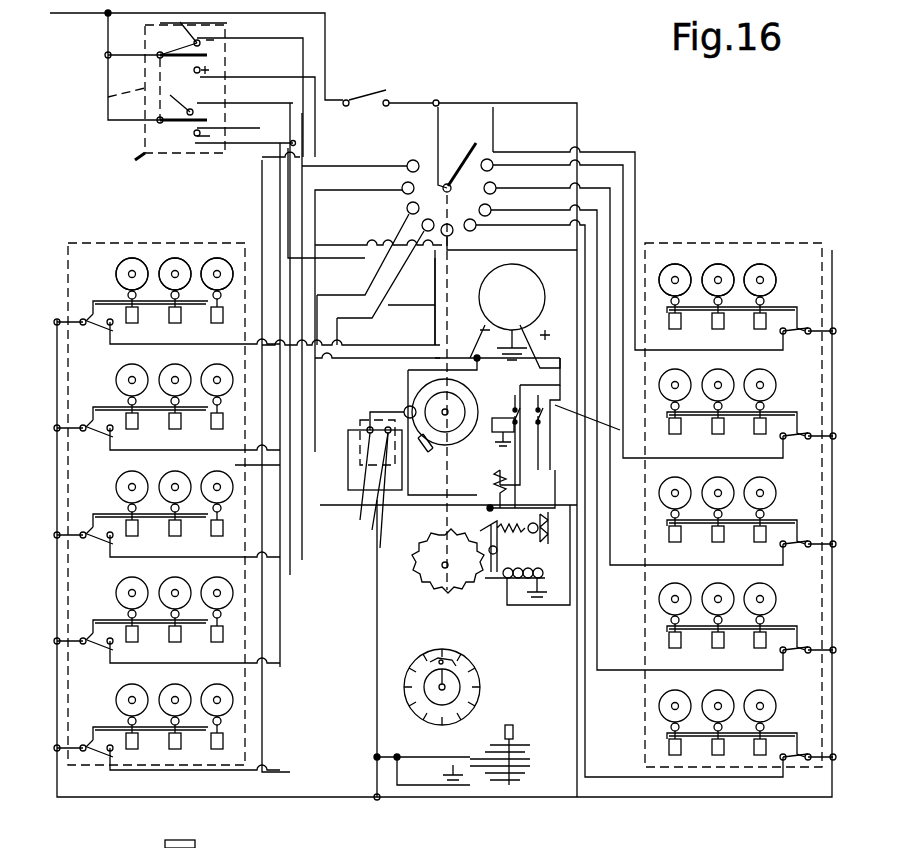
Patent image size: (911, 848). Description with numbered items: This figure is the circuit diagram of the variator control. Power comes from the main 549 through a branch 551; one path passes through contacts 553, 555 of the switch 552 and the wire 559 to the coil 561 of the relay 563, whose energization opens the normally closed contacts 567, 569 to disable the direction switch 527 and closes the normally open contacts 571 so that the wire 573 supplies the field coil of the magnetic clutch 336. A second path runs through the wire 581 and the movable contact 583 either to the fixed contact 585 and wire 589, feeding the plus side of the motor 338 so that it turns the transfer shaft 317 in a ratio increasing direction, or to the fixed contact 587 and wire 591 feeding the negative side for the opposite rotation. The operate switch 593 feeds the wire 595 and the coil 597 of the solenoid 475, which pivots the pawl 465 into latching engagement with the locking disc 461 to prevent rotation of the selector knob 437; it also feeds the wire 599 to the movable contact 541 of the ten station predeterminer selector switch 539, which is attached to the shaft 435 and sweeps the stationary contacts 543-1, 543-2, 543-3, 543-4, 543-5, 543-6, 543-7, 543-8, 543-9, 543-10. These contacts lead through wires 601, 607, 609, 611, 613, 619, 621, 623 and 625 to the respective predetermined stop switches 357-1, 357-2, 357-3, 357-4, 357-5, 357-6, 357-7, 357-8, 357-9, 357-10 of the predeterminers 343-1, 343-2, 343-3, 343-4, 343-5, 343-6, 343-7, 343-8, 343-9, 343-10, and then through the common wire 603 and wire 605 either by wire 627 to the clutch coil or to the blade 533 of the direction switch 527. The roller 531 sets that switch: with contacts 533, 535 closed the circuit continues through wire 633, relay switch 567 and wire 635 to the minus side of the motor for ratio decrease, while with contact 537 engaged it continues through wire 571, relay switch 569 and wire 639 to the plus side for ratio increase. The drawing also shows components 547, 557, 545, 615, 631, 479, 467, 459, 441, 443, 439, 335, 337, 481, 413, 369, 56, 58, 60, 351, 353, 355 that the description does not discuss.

The relay 547 is at (145, 100).
The main 549 is at (90, 15).
The branch 551 is at (106, 56).
The switch 552 is at (144, 154).
The contact 553 is at (160, 121).
The contact 555 is at (233, 128).
The contact 557 is at (210, 92).
The wire 559 is at (262, 146).
The wire 581 is at (122, 52).
The movable contact 583 is at (160, 56).
The fixed contact 585 is at (215, 64).
The fixed contact 587 is at (231, 86).
The wire 589 is at (317, 78).
The wire 591 is at (306, 48).
The operate switch 593 is at (388, 94).
The switch contact 545 is at (430, 102).
The predeterminer selector switch 539 is at (528, 105).
The movable contact 541 is at (478, 140).
The wire 595 is at (578, 104).
The wire 599 is at (437, 118).
The shaft 435 is at (447, 185).
The stationary contact 543-1 is at (490, 160).
The stationary contact 543-2 is at (493, 164).
The stationary contact 543-3 is at (496, 186).
The stationary contact 543-4 is at (491, 208).
The stationary contact 543-5 is at (476, 223).
The stationary contact 543-6 is at (452, 234).
The stationary contact 543-7 is at (422, 224).
The stationary contact 543-8 is at (407, 206).
The stationary contact 543-9 is at (403, 185).
The stationary contact 543-10 is at (411, 160).
The wire 601 is at (636, 150).
The wire 607 is at (623, 176).
The wire 609 is at (610, 196).
The wire 611 is at (605, 222).
The wire 613 is at (595, 247).
The wire 603 is at (58, 684).
The wire 605 is at (377, 690).
The conductor 615 is at (185, 344).
The wire 619 is at (160, 462).
The wire 621 is at (360, 294).
The wire 623 is at (360, 258).
The wire 625 is at (262, 168).
The wire 627 is at (382, 799).
The ground 631 is at (455, 780).
The wire 633 is at (239, 462).
The motor 338 is at (490, 282).
The wire 639 is at (560, 376).
The wire 635 is at (464, 426).
The coil 561 is at (477, 440).
The roller 531 is at (405, 408).
The brush 479 is at (433, 450).
The direction switch 527 is at (368, 428).
The movable contact 533 is at (376, 525).
The contact 535 is at (365, 518).
The fixed contact 537 is at (381, 545).
The relay 563 is at (507, 414).
The normally closed contacts 567 is at (515, 411).
The normally open contacts 571 is at (600, 425).
The normally closed contacts 569 is at (521, 490).
The locking disc 461 is at (435, 540).
The pawl 465 is at (517, 565).
The solenoid 467 is at (510, 580).
The solenoid 475 is at (520, 582).
The coil 597 is at (479, 627).
The pawl spring 459 is at (548, 585).
The dial 441 is at (420, 655).
The knob 437 is at (458, 686).
The pointer 443 is at (440, 658).
The pointer 439 is at (452, 664).
The transfer shaft 317 is at (513, 726).
The battery 335 is at (530, 745).
The battery 337 is at (530, 773).
The magnetic clutch 336 is at (478, 780).
The wire 573 is at (520, 786).
The legend 481 is at (212, 839).
The predeterminer 343-1 is at (778, 270).
The lamp group 343-2 is at (780, 385).
The lamp group 343-3 is at (790, 480).
The lamp group 343-4 is at (790, 586).
The lamp group 343-5 is at (790, 693).
The lamp group 343-6 is at (112, 240).
The lamp group 343-7 is at (95, 385).
The lamp group 343-8 is at (100, 492).
The lamp group 343-9 is at (105, 595).
The lamp group 343-10 is at (185, 752).
The switch 357-1 is at (805, 328).
The switch 357-2 is at (803, 434).
The predetermined stop switch 357-3 is at (803, 542).
The predetermined stop switch 357-4 is at (803, 648).
The switch 357-5 is at (803, 755).
The switch 357-6 is at (83, 320).
The switch 357-7 is at (113, 437).
The switch 357-8 is at (113, 544).
The switch 357-9 is at (113, 650).
The switch 357-10 is at (93, 750).
The lamp 413 is at (770, 285).
The lamp 369 is at (134, 266).
The lamp 56 is at (220, 268).
The lamp 58 is at (175, 268).
The lamp 60 is at (132, 272).
The lamp socket 351 is at (218, 314).
The lamp socket 353 is at (176, 314).
The lamp socket 355 is at (134, 314).